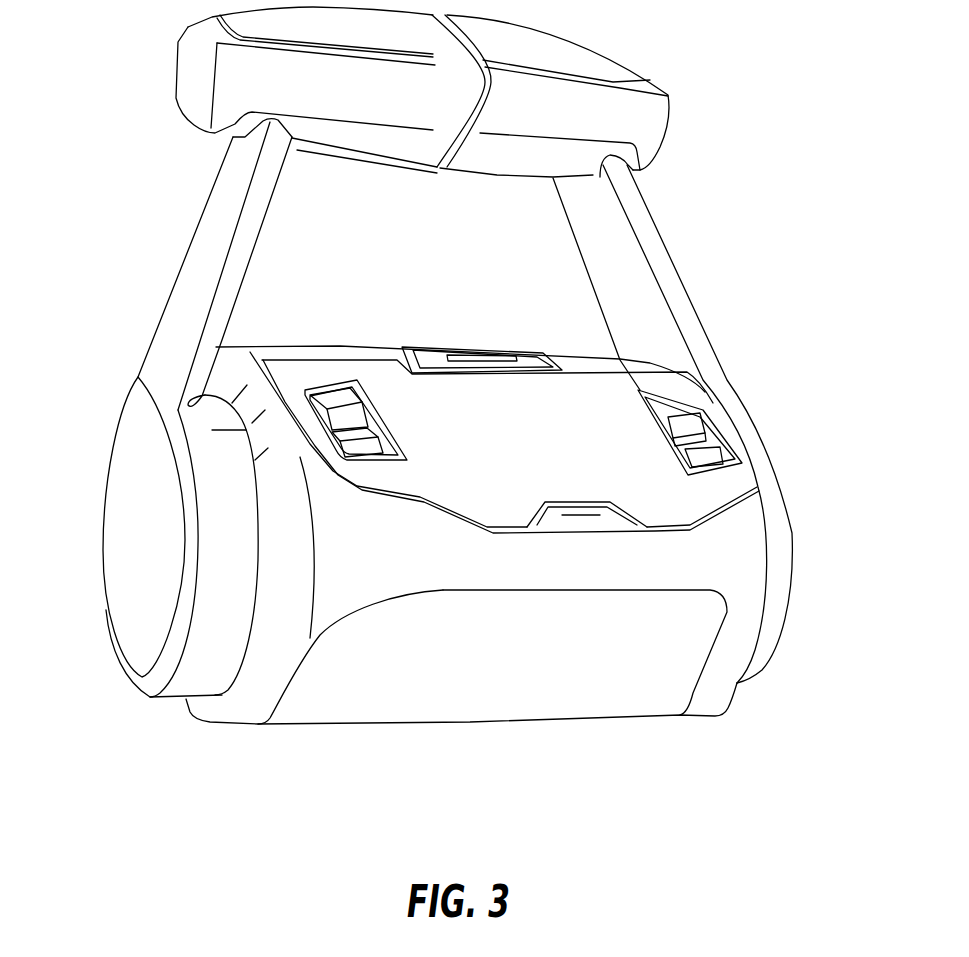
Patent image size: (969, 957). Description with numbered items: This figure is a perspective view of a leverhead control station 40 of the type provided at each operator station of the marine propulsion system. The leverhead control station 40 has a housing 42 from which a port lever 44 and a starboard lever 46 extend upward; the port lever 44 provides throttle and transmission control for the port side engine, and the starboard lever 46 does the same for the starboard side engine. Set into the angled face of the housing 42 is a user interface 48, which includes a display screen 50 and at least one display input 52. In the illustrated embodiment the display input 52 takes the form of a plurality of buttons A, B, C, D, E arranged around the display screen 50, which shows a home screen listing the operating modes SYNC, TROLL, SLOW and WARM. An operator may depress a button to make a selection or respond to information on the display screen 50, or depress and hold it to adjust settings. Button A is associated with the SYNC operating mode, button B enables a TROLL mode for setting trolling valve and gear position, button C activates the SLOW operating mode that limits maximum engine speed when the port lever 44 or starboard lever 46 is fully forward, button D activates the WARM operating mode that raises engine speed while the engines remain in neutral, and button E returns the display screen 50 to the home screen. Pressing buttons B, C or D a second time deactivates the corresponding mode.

The leverhead control station 40 is at (130, 183).
The housing 42 is at (708, 700).
The port lever 44 is at (183, 295).
The starboard lever 46 is at (615, 246).
The user interface 48 is at (775, 422).
The display screen 50 is at (526, 393).
The display input 52 is at (572, 469).
The button A is at (330, 398).
The button B is at (357, 455).
The button C is at (673, 415).
The button D is at (720, 470).
The button E is at (546, 532).